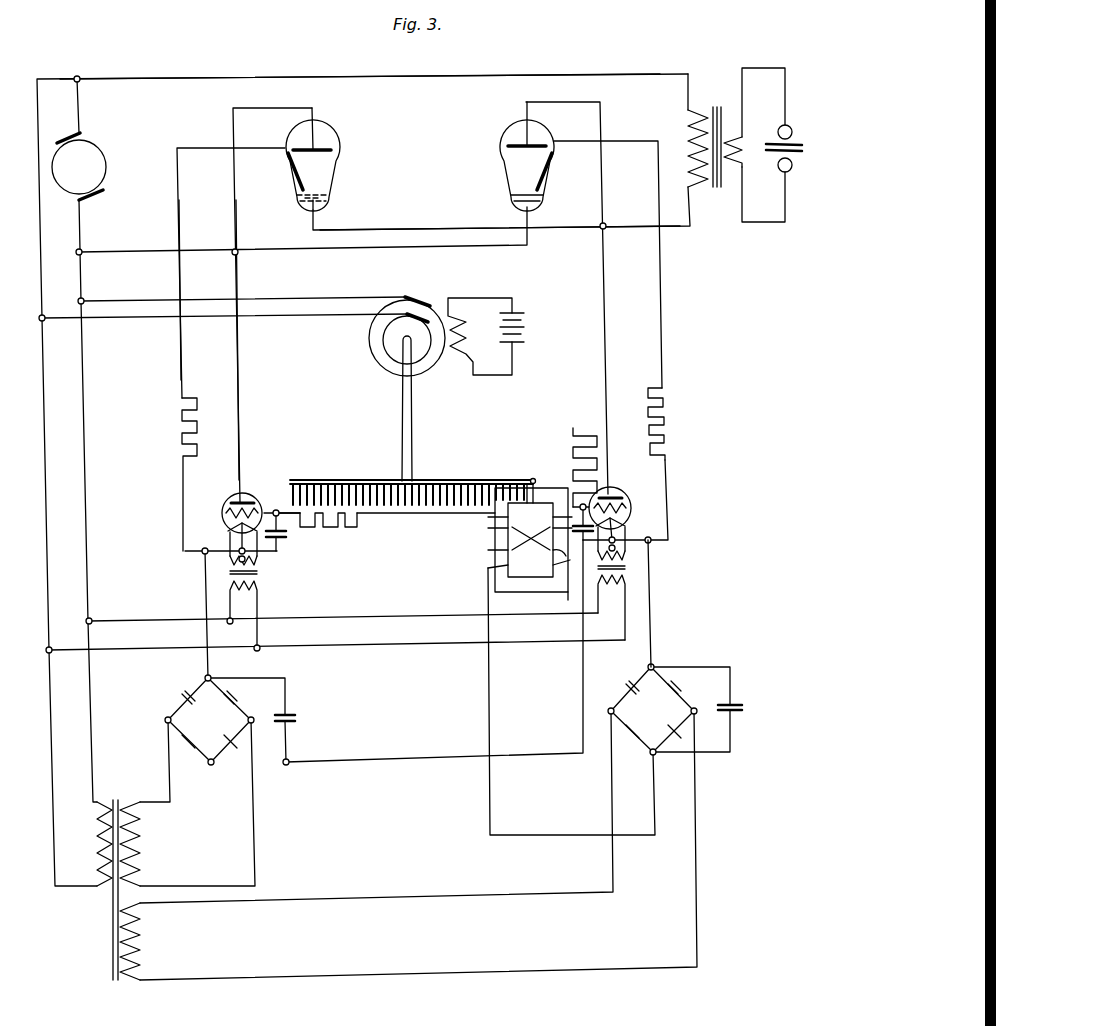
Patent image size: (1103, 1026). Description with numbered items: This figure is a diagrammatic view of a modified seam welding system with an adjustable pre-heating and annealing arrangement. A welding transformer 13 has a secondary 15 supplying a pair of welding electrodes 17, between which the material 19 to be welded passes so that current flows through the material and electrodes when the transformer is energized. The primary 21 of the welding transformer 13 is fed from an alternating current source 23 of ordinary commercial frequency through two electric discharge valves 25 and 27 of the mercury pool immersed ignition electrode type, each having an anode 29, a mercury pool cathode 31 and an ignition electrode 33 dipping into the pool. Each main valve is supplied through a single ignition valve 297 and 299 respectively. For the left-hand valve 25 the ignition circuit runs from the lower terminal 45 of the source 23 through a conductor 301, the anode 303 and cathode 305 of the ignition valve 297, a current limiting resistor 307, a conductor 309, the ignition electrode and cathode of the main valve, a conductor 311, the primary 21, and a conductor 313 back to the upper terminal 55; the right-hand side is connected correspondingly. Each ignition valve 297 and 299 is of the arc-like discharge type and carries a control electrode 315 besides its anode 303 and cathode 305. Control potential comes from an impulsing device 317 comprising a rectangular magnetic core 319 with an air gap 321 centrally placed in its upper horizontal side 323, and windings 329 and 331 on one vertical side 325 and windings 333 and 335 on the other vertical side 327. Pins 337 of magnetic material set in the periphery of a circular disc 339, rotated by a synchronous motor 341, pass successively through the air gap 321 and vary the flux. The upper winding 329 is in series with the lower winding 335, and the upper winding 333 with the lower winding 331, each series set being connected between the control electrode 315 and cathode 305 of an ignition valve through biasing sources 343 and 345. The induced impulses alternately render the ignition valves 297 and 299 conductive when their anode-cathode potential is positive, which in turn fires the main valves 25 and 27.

The welding transformer 13 is at (739, 134).
The secondary 15 is at (742, 180).
The welding electrodes 17 is at (760, 140).
The material 19 is at (792, 130).
The primary 21 is at (690, 178).
The alternating current source 23 is at (115, 121).
The electric discharge valve 25 is at (325, 131).
The electric discharge valve 27 is at (509, 131).
The anode 29 is at (335, 150).
The mercury pool cathode 31 is at (328, 198).
The ignition electrode 33 is at (298, 187).
The lower terminal 45 is at (84, 205).
The upper terminal 55 is at (74, 136).
The ignition valve 297 is at (252, 500).
The ignition valve 299 is at (612, 494).
The conductor 301 is at (240, 357).
The anode 303 is at (234, 503).
The cathode 305 is at (226, 522).
The current limiting resistor 307 is at (197, 417).
The conductor 309 is at (181, 357).
The conductor 311 is at (436, 228).
The conductor 313 is at (468, 74).
The control electrode 315 is at (638, 506).
The impulsing device 317 is at (529, 563).
The magnetic core 319 is at (562, 598).
The air gap 321 is at (526, 480).
The upper horizontal side 323 is at (538, 490).
The vertical side 325 is at (488, 530).
The vertical side 327 is at (562, 552).
The winding 329 is at (490, 518).
The winding 331 is at (488, 566).
The winding 333 is at (530, 540).
The winding 335 is at (535, 566).
The pins 337 is at (360, 506).
The circular disc 339 is at (390, 480).
The synchronous motor 341 is at (427, 279).
The biasing source 343 is at (224, 727).
The biasing source 345 is at (668, 717).